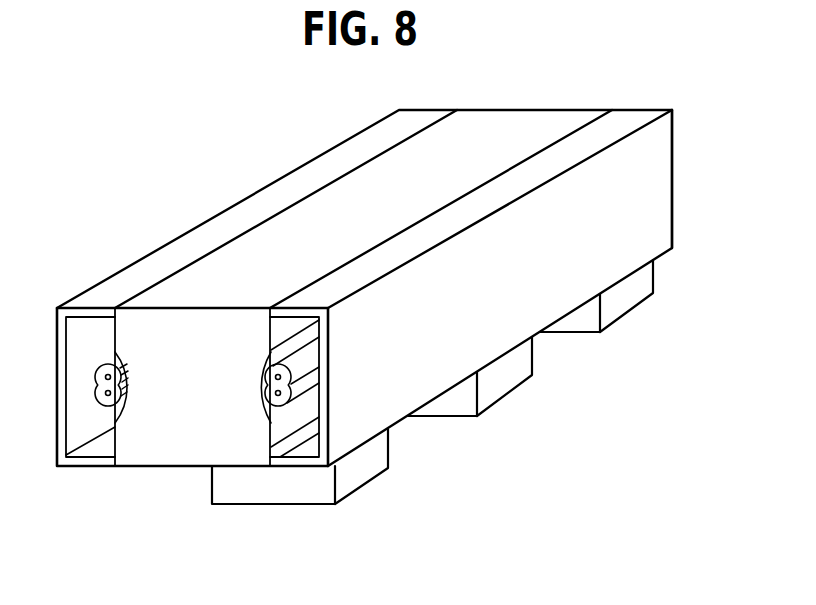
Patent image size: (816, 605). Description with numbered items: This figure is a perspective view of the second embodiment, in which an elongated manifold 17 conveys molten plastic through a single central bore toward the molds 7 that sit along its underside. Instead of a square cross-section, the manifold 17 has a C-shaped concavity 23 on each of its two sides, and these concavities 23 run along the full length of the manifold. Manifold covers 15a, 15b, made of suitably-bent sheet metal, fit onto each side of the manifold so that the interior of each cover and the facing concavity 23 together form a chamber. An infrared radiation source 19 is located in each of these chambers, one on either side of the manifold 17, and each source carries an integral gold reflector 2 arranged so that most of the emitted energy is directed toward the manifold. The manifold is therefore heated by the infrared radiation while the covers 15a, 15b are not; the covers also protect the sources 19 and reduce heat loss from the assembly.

The manifold 17 is at (508, 112).
The manifold cover 15a is at (135, 264).
The manifold cover 15b is at (672, 110).
The C-shaped concavity 23 is at (105, 368).
The gold reflector 2 is at (100, 393).
The infrared radiation source 19 is at (121, 396).
The mold 7 is at (367, 470).